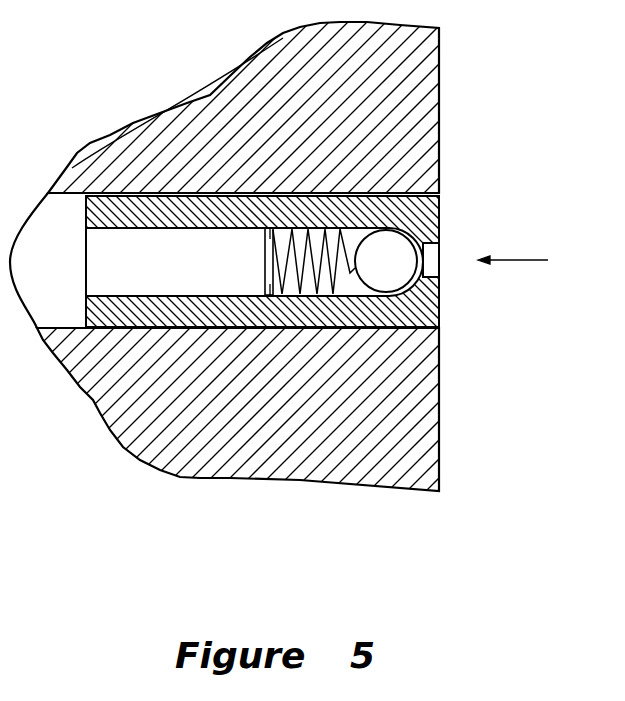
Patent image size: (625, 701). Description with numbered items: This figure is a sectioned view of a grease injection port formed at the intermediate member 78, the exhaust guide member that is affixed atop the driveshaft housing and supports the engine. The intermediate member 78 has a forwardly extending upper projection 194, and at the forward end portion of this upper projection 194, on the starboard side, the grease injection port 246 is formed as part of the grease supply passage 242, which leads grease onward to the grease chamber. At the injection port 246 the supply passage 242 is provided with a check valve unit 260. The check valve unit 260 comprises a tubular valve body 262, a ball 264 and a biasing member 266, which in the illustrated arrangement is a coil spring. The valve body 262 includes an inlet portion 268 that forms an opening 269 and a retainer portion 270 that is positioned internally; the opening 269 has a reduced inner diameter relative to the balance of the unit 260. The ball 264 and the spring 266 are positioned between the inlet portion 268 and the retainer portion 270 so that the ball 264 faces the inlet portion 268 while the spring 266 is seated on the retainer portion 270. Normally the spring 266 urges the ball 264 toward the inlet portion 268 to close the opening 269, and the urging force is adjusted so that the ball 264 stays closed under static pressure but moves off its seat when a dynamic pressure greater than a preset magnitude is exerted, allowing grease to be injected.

The intermediate member 78 is at (308, 284).
The upper projection 194 is at (430, 75).
The supply passage 242 is at (28, 279).
The grease injection port 246 is at (393, 328).
The check valve unit 260 is at (292, 266).
The tubular valve body 262 is at (300, 328).
The ball 264 is at (400, 260).
The biasing member 266 is at (265, 258).
The inlet portion 268 is at (432, 296).
The opening 269 is at (440, 249).
The retainer portion 270 is at (257, 237).